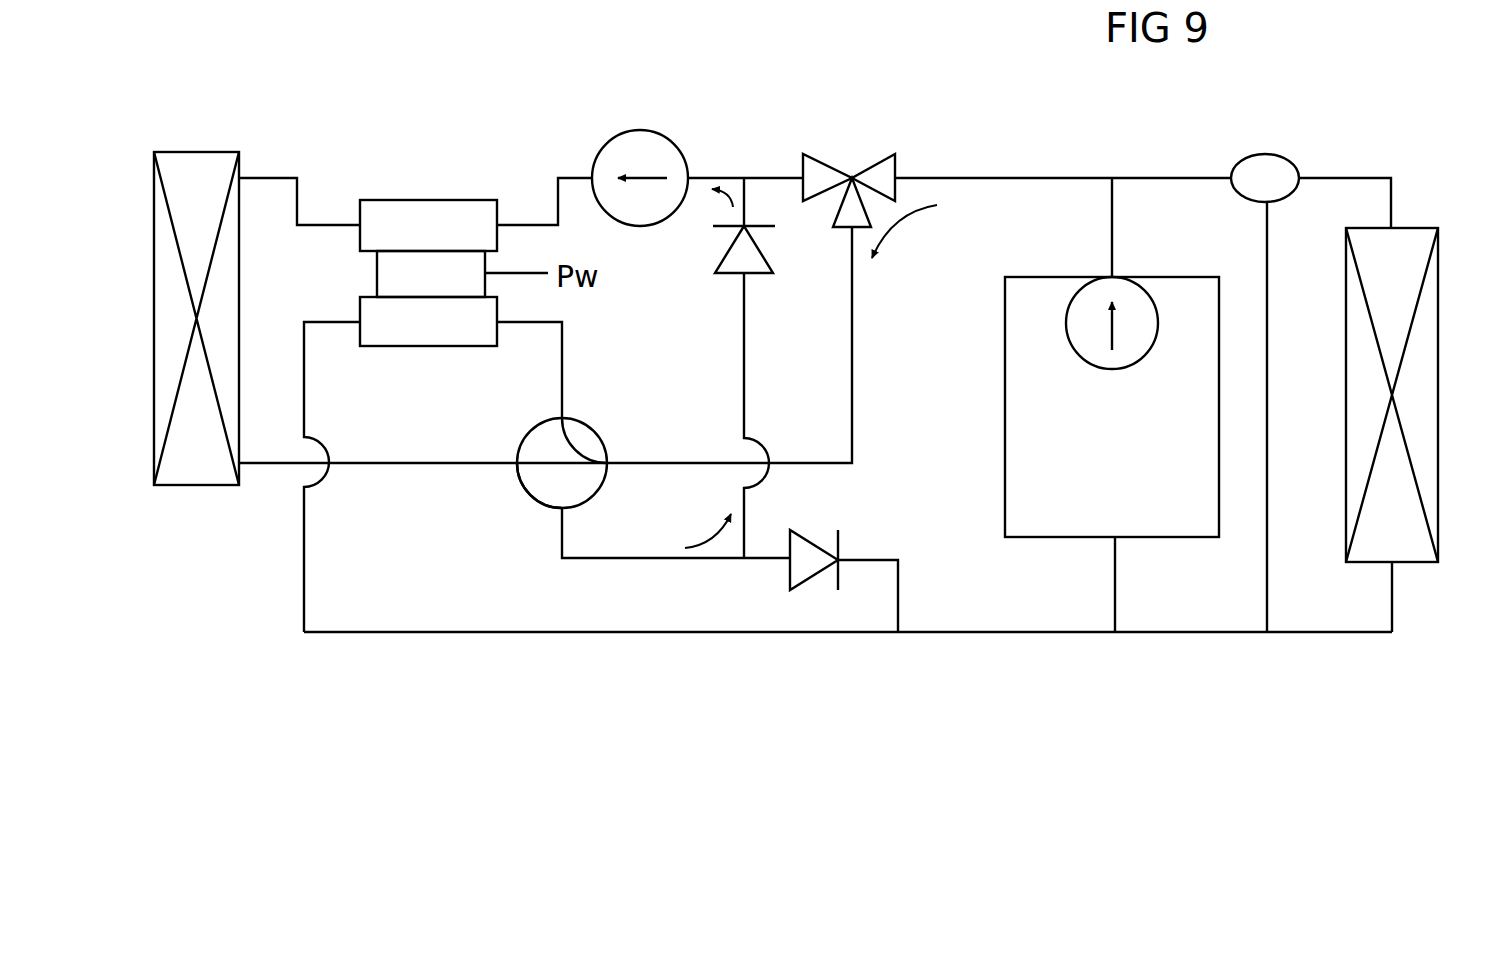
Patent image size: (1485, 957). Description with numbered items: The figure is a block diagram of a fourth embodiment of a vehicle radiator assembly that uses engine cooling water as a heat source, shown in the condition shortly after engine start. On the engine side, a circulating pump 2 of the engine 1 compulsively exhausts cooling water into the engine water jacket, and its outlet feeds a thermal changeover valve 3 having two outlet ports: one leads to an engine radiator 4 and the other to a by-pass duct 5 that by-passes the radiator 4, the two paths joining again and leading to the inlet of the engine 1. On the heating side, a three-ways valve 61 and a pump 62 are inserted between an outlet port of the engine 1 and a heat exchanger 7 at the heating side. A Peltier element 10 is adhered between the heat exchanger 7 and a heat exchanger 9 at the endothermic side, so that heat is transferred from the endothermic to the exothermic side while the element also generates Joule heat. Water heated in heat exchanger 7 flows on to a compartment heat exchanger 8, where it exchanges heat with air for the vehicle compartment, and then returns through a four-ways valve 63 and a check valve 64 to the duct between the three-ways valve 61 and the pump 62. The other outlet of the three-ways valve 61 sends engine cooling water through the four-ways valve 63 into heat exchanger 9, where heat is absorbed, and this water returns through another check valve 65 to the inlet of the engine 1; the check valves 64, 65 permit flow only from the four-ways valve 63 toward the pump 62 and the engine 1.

The engine 1 is at (1037, 313).
The circulating pump 2 is at (1133, 310).
The thermal changeover valve 3 is at (1273, 172).
The engine radiator 4 is at (1420, 228).
The by-pass duct 5 is at (1268, 600).
The heat exchanger 7 is at (434, 199).
The compartment heat exchanger 8 is at (187, 152).
The heat exchanger 9 is at (434, 346).
The Peltier element 10 is at (377, 277).
The three-ways valve 61 is at (873, 163).
The pump 62 is at (677, 147).
The four-ways valve 63 is at (595, 428).
The check valve 64 is at (770, 252).
The check valve 65 is at (848, 548).